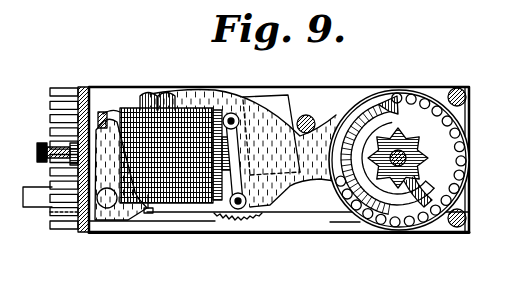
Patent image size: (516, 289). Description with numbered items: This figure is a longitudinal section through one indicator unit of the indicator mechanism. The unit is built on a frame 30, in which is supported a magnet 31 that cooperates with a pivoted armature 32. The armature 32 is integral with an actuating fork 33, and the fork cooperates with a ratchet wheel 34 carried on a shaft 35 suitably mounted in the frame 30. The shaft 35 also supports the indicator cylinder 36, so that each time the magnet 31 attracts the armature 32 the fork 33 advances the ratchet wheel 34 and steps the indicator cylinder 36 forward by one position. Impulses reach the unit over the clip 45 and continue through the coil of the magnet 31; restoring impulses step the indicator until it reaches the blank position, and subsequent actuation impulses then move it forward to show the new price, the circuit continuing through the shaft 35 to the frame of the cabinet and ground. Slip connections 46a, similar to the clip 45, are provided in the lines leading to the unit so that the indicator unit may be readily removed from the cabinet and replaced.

The frame 30 is at (288, 223).
The magnet 31 is at (178, 204).
The pivoted armature 32 is at (247, 208).
The actuating fork 33 is at (361, 101).
The ratchet wheel 34 is at (421, 176).
The shaft 35 is at (398, 186).
The indicator cylinder 36 is at (470, 150).
The clip 45 is at (46, 207).
The slip connections 46a is at (49, 86).